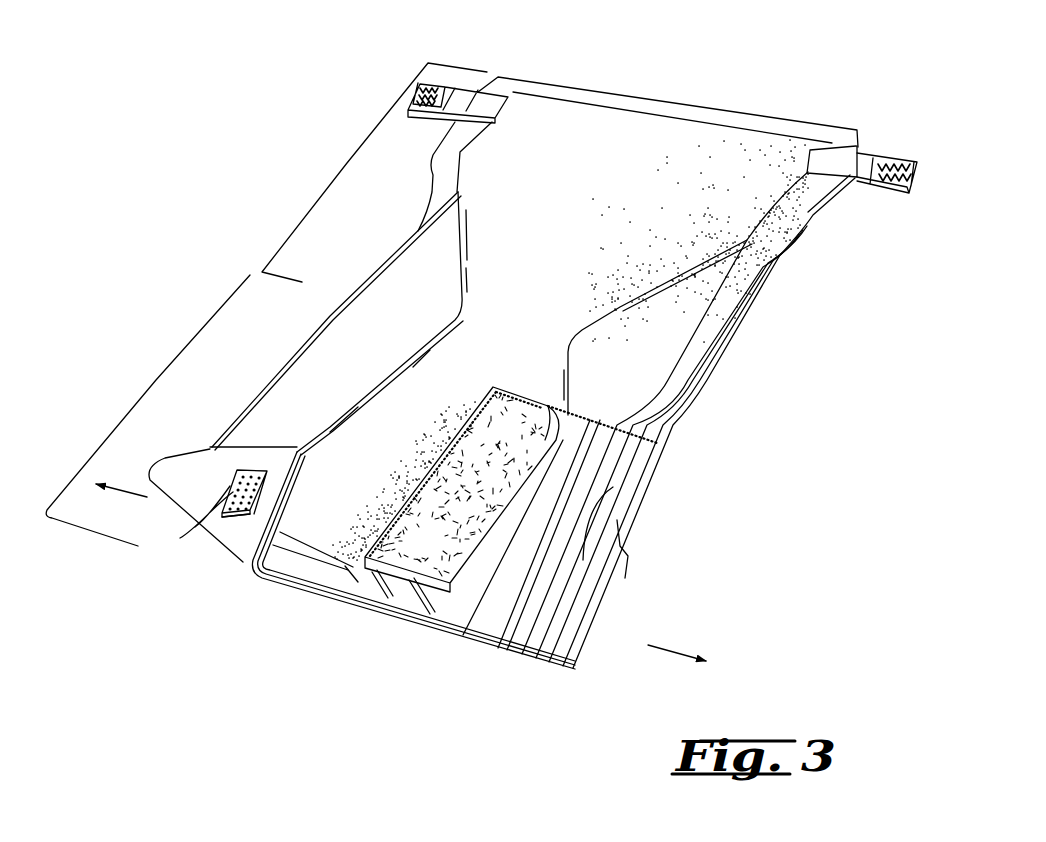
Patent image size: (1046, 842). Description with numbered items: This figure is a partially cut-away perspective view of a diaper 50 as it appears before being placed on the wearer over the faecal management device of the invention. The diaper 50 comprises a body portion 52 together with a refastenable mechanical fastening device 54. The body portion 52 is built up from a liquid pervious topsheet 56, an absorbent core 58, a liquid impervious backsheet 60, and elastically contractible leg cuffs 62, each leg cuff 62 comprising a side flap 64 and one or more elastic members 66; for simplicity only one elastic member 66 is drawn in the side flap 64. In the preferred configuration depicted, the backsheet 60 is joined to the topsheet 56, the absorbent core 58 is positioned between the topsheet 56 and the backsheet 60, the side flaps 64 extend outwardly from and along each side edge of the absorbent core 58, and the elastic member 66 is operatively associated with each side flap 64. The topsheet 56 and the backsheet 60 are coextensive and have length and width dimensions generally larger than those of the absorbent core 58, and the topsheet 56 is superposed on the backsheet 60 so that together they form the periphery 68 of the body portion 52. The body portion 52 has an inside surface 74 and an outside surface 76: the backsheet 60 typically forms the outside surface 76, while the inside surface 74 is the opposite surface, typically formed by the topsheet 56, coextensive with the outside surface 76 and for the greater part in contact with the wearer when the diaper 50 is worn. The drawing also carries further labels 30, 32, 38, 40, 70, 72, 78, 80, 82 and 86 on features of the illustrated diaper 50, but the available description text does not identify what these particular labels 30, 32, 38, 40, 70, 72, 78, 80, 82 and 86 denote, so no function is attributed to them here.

The fastening device 30 is at (230, 473).
The landing zone patch 32 is at (243, 468).
The elastic strands 38 is at (181, 535).
The hook patch 40 is at (240, 522).
The diaper 50 is at (481, 376).
The body portion 52 is at (725, 353).
The refastenable mechanical fastening device 54 is at (865, 120).
The liquid pervious topsheet 56 is at (385, 467).
The absorbent core 58 is at (440, 551).
The liquid impervious backsheet 60 is at (602, 590).
The elastically contractible leg cuffs 62 is at (678, 377).
The side flap 64 is at (634, 410).
The elastic member 66 is at (612, 488).
The periphery 68 is at (303, 590).
The barrier cuff 70 is at (300, 348).
The waist edge 72 is at (563, 82).
The inside surface 74 is at (623, 123).
The outside surface 76 is at (468, 640).
The backsheet 78 is at (347, 164).
The backsheet ear 80 is at (149, 389).
The side panel 82 is at (811, 210).
The tab attachment zone 86 is at (833, 150).